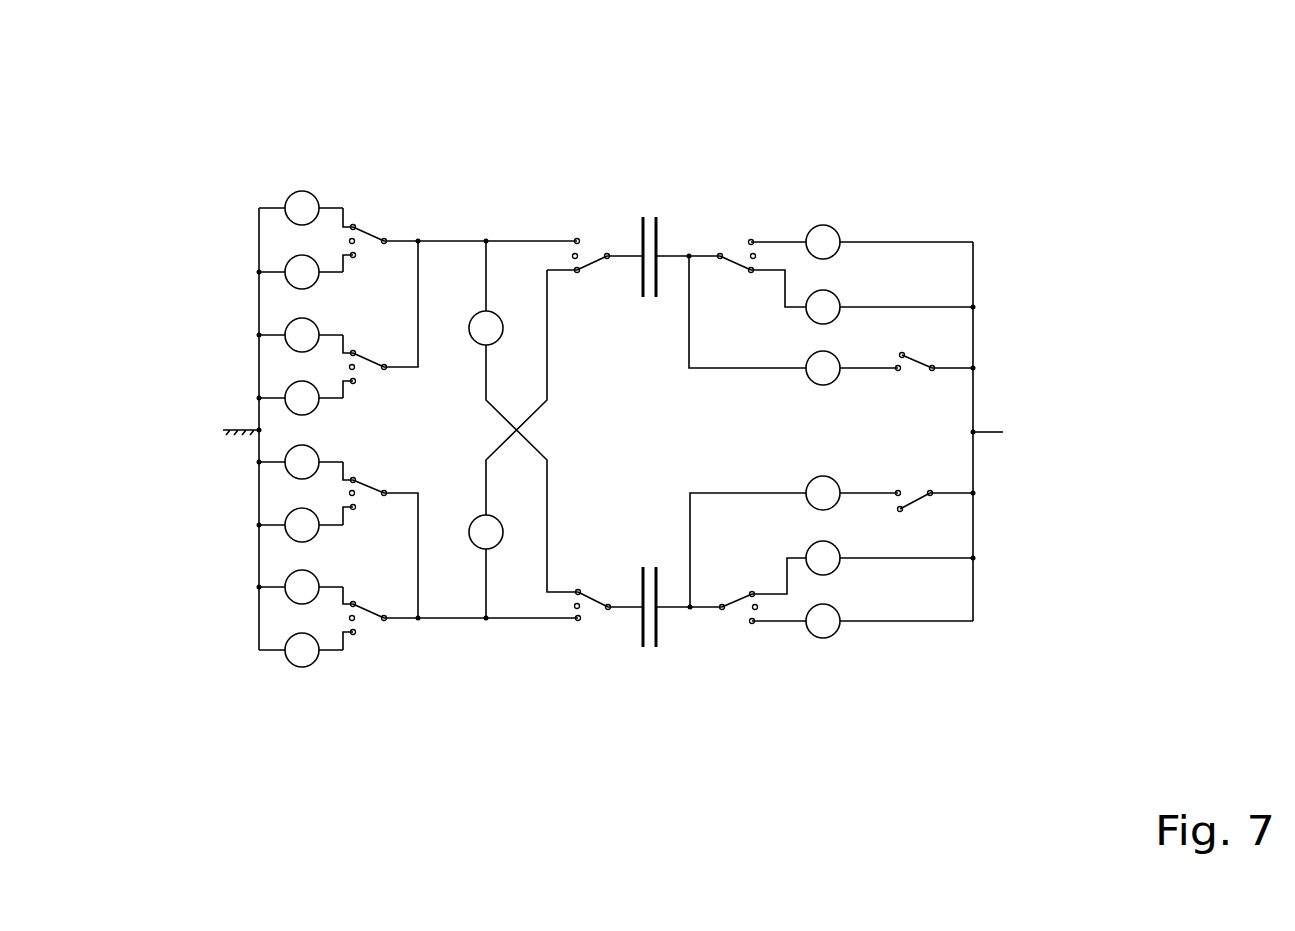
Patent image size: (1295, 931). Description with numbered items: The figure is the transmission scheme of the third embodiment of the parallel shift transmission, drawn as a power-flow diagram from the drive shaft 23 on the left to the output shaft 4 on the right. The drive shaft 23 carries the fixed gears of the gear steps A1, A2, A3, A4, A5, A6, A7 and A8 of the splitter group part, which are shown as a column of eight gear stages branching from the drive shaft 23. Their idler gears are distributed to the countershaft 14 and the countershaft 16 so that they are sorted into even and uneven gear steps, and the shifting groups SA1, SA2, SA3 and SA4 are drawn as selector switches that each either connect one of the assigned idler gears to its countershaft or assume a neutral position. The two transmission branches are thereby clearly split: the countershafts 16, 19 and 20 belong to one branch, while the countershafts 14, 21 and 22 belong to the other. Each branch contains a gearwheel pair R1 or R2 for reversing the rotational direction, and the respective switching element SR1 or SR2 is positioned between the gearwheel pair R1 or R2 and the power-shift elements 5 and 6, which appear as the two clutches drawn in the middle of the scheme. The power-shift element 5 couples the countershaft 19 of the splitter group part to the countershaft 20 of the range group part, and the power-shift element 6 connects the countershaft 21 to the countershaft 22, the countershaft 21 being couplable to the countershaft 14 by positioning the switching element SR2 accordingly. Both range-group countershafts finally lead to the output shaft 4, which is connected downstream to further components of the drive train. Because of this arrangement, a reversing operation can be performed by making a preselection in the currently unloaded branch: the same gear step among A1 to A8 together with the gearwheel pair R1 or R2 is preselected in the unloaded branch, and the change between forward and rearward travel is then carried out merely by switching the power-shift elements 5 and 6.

The gear step A1 is at (297, 393).
The gear step A2 is at (305, 652).
The gear step A3 is at (297, 270).
The gear step A4 is at (297, 530).
The gear step A5 is at (297, 333).
The gear step A6 is at (297, 597).
The gear step A7 is at (302, 206).
The gear step A8 is at (297, 467).
The shifting group SA1 is at (372, 362).
The shifting group SA2 is at (368, 238).
The shifting group SA3 is at (370, 630).
The shifting group SA4 is at (372, 490).
The switching element SR1 is at (595, 262).
The switching element SR2 is at (596, 602).
The gearwheel pair R1 is at (492, 540).
The gearwheel pair R2 is at (492, 323).
The countershaft 14 is at (453, 620).
The countershaft 16 is at (451, 240).
The power-shift element 5 is at (662, 256).
The power-shift element 6 is at (659, 612).
The countershaft 19 is at (625, 256).
The countershaft 20 is at (673, 256).
The countershaft 21 is at (628, 608).
The countershaft 22 is at (672, 608).
The drive shaft 23 is at (238, 431).
The output shaft 4 is at (1003, 432).